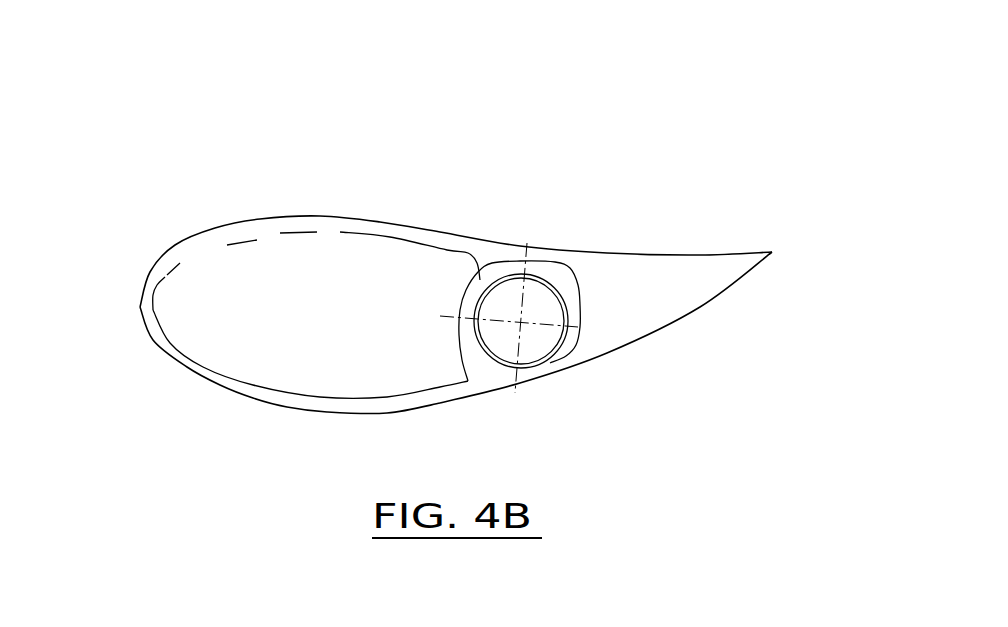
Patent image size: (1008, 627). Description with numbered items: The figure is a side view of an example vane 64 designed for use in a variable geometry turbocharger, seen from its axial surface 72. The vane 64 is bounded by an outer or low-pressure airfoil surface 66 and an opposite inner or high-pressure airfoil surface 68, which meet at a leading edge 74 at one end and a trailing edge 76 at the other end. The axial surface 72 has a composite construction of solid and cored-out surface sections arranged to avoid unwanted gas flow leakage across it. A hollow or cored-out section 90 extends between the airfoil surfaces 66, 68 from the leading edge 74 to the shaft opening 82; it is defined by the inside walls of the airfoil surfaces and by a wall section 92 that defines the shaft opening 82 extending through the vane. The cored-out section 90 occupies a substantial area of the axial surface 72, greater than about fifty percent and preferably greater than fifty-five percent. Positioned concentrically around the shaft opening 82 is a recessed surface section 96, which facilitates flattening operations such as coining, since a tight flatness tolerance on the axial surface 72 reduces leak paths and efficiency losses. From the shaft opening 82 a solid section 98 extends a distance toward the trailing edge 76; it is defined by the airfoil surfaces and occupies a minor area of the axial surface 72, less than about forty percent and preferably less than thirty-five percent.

The vane 64 is at (515, 183).
The outer or low-pressure airfoil surface 66 is at (290, 412).
The inner or high-pressure airfoil surface 68 is at (352, 215).
The axial surface 72 is at (397, 392).
The leading edge 74 is at (140, 317).
The trailing edge 76 is at (772, 252).
The shaft opening 82 is at (533, 338).
The cored-out section 90 is at (305, 352).
The wall section 92 is at (458, 302).
The recessed surface section 96 is at (493, 367).
The solid section 98 is at (627, 310).